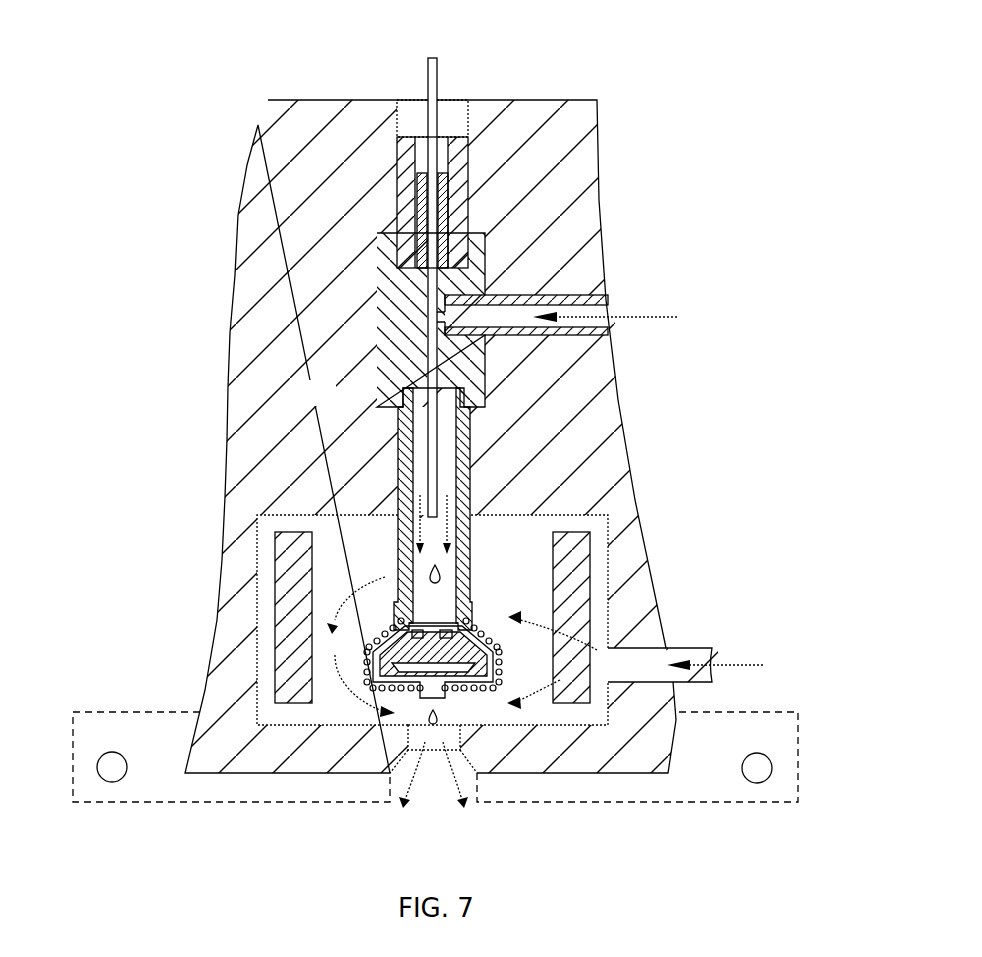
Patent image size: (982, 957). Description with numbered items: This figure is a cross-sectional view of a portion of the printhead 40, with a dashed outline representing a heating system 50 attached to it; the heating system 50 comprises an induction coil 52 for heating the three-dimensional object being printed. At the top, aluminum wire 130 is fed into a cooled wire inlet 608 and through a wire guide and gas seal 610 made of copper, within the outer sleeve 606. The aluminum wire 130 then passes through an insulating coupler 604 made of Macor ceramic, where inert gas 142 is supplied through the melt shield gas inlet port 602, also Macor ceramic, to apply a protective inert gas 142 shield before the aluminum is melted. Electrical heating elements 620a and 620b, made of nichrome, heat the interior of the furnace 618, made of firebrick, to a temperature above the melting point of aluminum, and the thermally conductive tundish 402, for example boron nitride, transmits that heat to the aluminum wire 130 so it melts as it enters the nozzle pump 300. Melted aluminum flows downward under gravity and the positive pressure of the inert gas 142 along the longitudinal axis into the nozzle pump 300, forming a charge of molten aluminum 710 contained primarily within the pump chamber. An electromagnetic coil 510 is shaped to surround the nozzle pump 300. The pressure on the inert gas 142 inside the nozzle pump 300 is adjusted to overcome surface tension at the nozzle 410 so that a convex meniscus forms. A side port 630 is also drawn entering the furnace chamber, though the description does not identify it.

The printhead 40 is at (143, 265).
The furnace 618 is at (333, 407).
The cooled wire inlet 608 is at (398, 84).
The aluminum wire 130 is at (438, 78).
The wire guide and gas seal 610 is at (443, 193).
The outer sleeve 606 is at (462, 210).
The insulating coupler 604 is at (392, 313).
The melt shield gas inlet port 602 is at (562, 298).
The inert gas 142 is at (645, 317).
The tundish 402 is at (470, 455).
The electrical heating element 620a is at (293, 583).
The electrical heating element 620b is at (570, 583).
The nozzle pump 300 is at (335, 650).
The electromagnetic coil 510 is at (483, 633).
The charge of molten aluminum 710 is at (397, 652).
The gas inlet port 630 is at (685, 648).
The nozzle 410 is at (445, 700).
The heating system 50 is at (85, 712).
The induction coil 52 is at (112, 782).